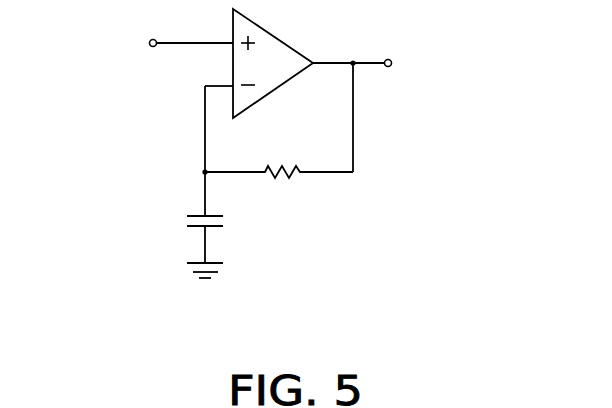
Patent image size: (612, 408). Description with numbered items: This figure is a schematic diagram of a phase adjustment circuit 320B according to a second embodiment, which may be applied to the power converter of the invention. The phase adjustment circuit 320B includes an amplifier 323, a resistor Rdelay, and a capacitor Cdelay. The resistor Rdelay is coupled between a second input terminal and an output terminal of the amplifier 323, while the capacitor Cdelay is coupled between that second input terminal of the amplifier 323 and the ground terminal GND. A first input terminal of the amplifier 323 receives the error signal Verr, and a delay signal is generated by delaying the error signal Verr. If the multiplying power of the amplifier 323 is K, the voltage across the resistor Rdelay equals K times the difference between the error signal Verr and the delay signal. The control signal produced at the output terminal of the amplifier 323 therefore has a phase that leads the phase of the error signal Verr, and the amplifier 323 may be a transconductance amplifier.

The amplifier 323 is at (283, 41).
The phase adjustment circuit 320B is at (506, 319).
The error signal Verr is at (164, 39).
The resistor Rdelay is at (279, 154).
The capacitor Cdelay is at (249, 234).
The ground terminal GND is at (206, 290).